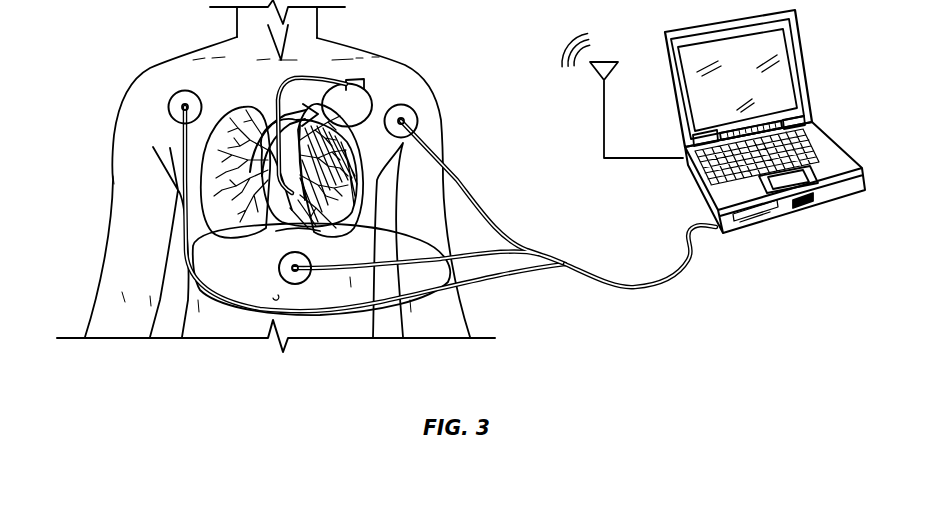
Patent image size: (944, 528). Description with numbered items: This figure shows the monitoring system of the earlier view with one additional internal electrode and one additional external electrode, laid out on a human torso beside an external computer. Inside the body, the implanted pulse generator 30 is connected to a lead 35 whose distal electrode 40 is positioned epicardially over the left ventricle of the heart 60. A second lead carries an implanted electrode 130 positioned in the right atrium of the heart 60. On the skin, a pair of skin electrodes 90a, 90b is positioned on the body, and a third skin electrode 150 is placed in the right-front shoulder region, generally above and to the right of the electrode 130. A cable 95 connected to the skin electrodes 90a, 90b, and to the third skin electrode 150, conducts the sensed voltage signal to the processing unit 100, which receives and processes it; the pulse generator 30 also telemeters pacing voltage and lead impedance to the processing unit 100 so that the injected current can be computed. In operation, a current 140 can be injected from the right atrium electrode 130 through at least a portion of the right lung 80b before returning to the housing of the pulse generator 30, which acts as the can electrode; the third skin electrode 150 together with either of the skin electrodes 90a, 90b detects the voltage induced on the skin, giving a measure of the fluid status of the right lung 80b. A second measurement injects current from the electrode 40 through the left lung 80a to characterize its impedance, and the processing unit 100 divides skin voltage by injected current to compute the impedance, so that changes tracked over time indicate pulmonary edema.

The pulse generator 30 is at (366, 88).
The lead 35 is at (280, 78).
The electrode 40 is at (275, 218).
The heart 60 is at (287, 228).
The left lung 80a is at (457, 285).
The right lung 80b is at (183, 133).
The skin electrode 90a is at (418, 113).
The skin electrode 90b is at (297, 284).
The cable 95 is at (646, 284).
The processing unit 100 is at (836, 142).
The implanted electrode 130 is at (283, 203).
The current 140 is at (260, 106).
The third skin electrode 150 is at (168, 106).